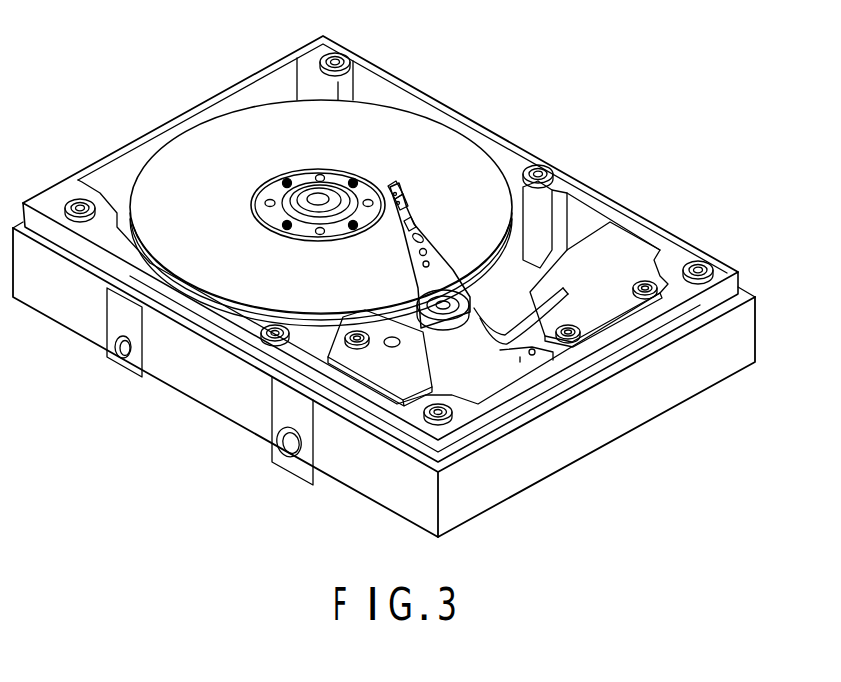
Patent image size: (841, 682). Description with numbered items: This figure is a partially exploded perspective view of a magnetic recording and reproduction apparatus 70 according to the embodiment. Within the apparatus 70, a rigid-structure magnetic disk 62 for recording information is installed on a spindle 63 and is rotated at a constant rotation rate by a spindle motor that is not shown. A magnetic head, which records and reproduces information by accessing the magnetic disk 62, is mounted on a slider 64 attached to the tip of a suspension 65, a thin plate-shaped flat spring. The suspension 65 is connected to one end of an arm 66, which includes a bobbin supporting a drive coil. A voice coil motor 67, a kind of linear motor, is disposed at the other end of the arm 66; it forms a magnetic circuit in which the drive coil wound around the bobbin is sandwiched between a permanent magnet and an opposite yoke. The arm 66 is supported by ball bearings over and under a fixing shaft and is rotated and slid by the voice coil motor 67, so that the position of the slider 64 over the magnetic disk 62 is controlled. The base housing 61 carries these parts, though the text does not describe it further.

The magnetic recording and reproduction apparatus 70 is at (523, 54).
The base (housing) 61 is at (652, 392).
The magnetic disk 62 is at (382, 133).
The spindle 63 is at (263, 192).
The slider 64 is at (397, 193).
The suspension 65 is at (412, 208).
The arm 66 is at (428, 280).
The voice coil motor 67 is at (467, 340).